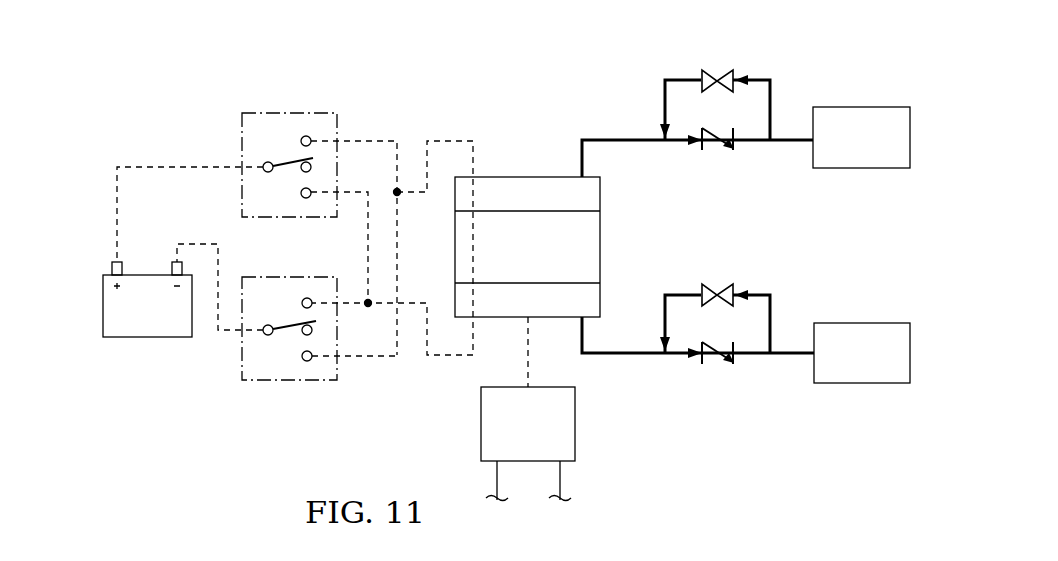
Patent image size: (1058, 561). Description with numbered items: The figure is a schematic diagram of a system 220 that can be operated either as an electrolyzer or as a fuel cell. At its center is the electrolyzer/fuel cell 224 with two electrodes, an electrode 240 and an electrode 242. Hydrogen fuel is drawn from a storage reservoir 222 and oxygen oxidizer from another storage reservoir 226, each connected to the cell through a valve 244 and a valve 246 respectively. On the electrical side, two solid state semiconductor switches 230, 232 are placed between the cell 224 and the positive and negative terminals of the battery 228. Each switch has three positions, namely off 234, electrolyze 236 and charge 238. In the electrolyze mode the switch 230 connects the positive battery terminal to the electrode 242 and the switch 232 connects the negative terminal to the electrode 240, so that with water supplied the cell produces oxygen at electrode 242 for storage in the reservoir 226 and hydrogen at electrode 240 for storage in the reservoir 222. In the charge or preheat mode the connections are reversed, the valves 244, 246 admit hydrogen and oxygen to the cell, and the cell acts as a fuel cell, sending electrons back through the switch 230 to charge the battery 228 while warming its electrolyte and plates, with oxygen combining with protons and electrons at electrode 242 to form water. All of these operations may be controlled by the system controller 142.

The system 220 is at (176, 60).
The solid state semiconductor switch 230 is at (305, 112).
The solid state semiconductor switch 232 is at (303, 382).
The off position 234 is at (318, 166).
The electrolyze position 236 is at (300, 194).
The charge position 238 is at (300, 142).
The battery 228 is at (167, 325).
The electrolyzer/fuel cell 224 is at (550, 262).
The electrode 240 is at (550, 207).
The electrode 242 is at (550, 312).
The storage reservoir 222 is at (883, 153).
The storage reservoir 226 is at (883, 368).
The valve 244 is at (735, 70).
The valve 246 is at (735, 286).
The system controller 142 is at (547, 436).